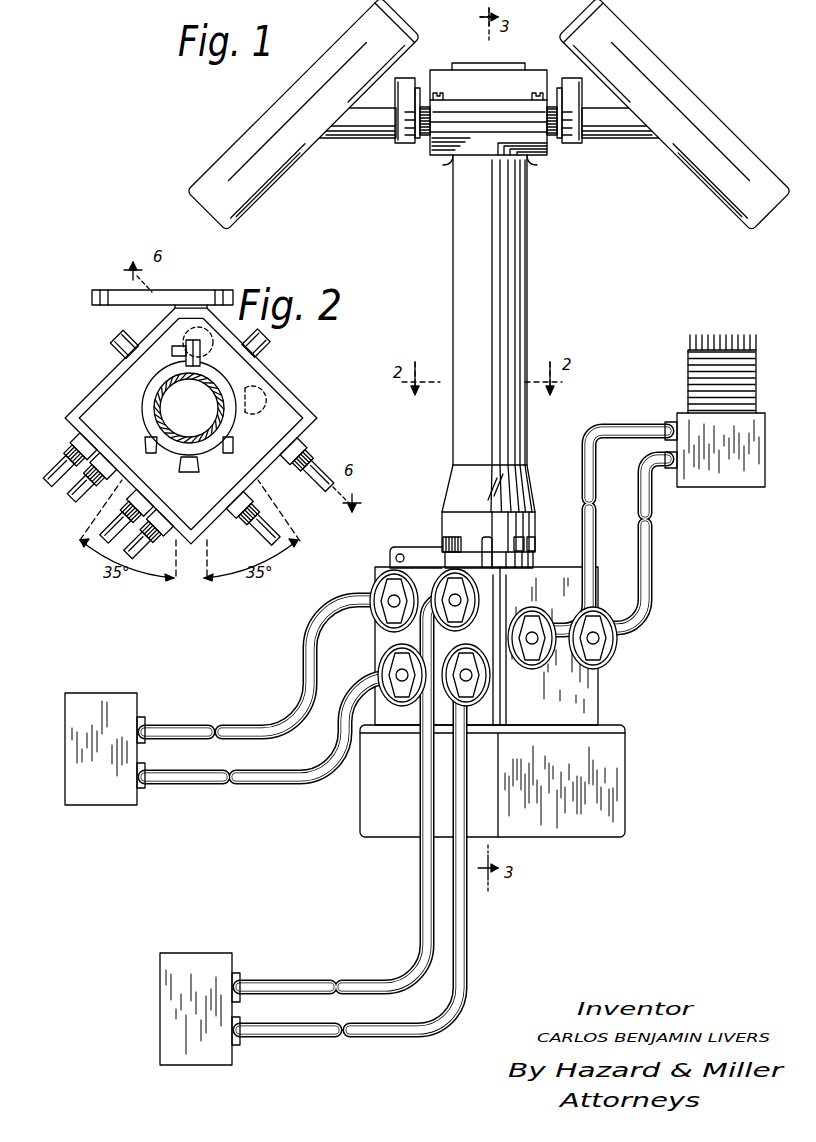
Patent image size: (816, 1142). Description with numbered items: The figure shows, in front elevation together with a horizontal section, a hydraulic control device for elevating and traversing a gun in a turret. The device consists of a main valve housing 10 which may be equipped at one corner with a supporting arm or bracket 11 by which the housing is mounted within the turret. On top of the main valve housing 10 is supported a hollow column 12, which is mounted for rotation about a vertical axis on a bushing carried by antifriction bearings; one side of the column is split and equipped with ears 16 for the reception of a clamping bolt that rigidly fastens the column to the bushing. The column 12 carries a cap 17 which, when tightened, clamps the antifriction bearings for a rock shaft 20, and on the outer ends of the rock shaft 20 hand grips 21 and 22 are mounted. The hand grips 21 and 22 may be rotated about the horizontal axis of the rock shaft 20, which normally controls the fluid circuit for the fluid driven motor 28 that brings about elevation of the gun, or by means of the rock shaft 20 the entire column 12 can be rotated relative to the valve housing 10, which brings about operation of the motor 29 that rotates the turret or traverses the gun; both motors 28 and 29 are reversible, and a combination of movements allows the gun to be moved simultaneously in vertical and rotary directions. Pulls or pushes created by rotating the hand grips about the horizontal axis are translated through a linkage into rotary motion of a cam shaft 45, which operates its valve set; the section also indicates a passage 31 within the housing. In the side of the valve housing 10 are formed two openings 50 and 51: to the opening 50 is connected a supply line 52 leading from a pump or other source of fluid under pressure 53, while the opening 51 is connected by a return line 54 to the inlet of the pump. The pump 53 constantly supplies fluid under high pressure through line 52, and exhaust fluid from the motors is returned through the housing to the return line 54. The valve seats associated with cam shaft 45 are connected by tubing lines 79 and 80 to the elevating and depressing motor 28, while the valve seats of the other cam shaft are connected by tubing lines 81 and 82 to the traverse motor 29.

In FIG. 1, the main valve housing 10 is at (575, 720).
In FIG. 2, the main valve housing 10 is at (98, 388).
In FIG. 1, the supporting arm or bracket 11 is at (417, 552).
In FIG. 2, the supporting arm or bracket 11 is at (192, 290).
In FIG. 1, the hollow column 12 is at (470, 296).
In FIG. 2, the hollow column 12 is at (152, 402).
In FIG. 2, the ears 16 is at (182, 352).
In FIG. 1, the cap 17 is at (468, 72).
In FIG. 1, the rock shaft 20 is at (418, 136).
In FIG. 1, the hand grip 21 is at (660, 92).
In FIG. 1, the hand grip 22 is at (345, 44).
In FIG. 1, the fluid driven motor 28 is at (214, 932).
In FIG. 1, the motor 29 is at (105, 790).
In FIG. 2, the passage 31 is at (170, 322).
In FIG. 2, the cam shaft 45 is at (268, 384).
In FIG. 1, the opening 50 is at (548, 666).
In FIG. 1, the opening 51 is at (612, 660).
In FIG. 1, the supply line 52 is at (626, 404).
In FIG. 2, the supply line 52 is at (268, 522).
In FIG. 1, the pump or source of fluid under pressure 53 is at (742, 472).
In FIG. 1, the return line 54 is at (642, 543).
In FIG. 2, the return line 54 is at (270, 470).
In FIG. 1, the tubing line 79 is at (303, 960).
In FIG. 2, the tubing line 79 is at (120, 508).
In FIG. 1, the tubing line 80 is at (312, 1032).
In FIG. 2, the tubing line 80 is at (136, 528).
In FIG. 1, the tubing line 81 is at (258, 703).
In FIG. 2, the tubing line 81 is at (66, 452).
In FIG. 1, the tubing line 82 is at (262, 775).
In FIG. 2, the tubing line 82 is at (80, 472).